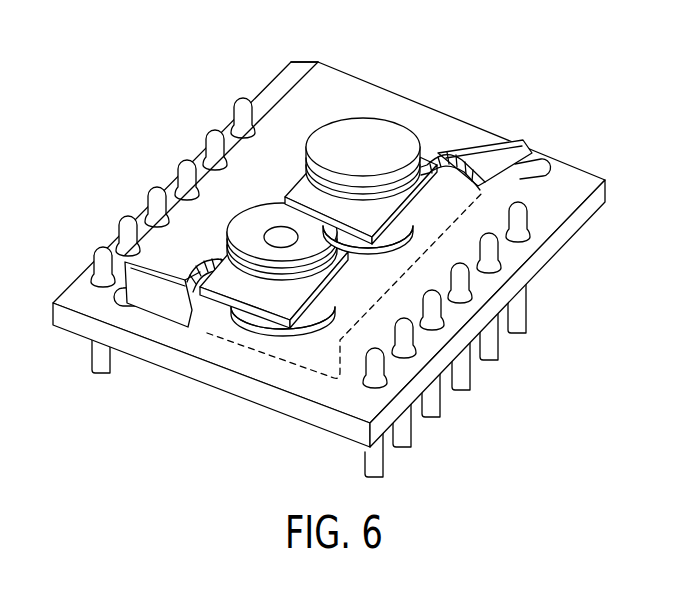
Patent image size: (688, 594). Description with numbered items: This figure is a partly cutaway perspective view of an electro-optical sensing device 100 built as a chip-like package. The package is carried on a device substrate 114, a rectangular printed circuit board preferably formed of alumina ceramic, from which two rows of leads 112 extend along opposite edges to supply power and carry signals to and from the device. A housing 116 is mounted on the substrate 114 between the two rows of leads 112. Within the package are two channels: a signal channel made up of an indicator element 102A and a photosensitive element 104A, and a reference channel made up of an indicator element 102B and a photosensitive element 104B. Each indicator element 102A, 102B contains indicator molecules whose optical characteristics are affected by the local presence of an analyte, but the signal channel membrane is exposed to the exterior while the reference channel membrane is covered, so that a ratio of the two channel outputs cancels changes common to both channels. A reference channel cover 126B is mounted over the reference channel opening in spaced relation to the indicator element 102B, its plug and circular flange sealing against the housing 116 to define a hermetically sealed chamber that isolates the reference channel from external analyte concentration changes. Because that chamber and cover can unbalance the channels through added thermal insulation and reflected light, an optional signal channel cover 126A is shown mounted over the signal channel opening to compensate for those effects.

The electro-optical sensing device 100 is at (313, 244).
The indicator element 102A is at (228, 301).
The indicator element 102B is at (408, 221).
The photosensitive element 104A is at (277, 333).
The photosensitive element 104B is at (397, 247).
The leads 112 is at (313, 269).
The device substrate 114 is at (63, 330).
The housing 116 is at (362, 75).
The signal channel cover 126A is at (229, 222).
The reference channel cover 126B is at (397, 118).